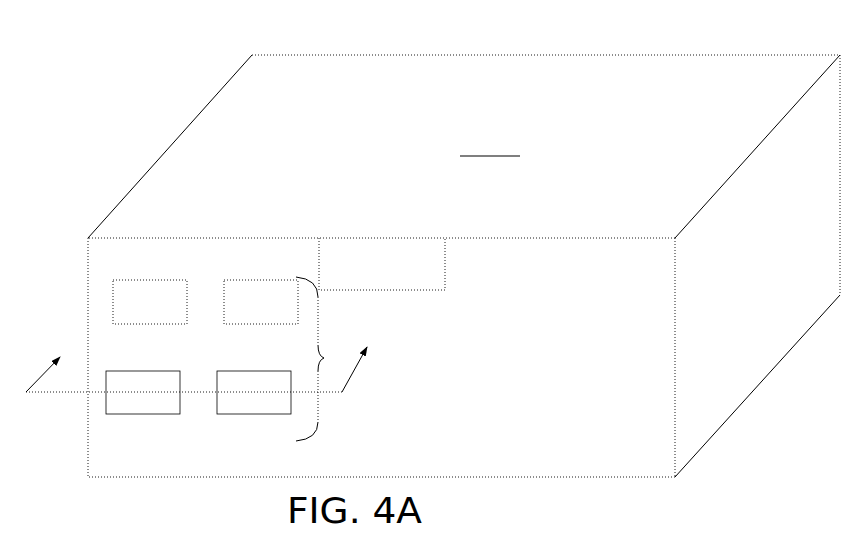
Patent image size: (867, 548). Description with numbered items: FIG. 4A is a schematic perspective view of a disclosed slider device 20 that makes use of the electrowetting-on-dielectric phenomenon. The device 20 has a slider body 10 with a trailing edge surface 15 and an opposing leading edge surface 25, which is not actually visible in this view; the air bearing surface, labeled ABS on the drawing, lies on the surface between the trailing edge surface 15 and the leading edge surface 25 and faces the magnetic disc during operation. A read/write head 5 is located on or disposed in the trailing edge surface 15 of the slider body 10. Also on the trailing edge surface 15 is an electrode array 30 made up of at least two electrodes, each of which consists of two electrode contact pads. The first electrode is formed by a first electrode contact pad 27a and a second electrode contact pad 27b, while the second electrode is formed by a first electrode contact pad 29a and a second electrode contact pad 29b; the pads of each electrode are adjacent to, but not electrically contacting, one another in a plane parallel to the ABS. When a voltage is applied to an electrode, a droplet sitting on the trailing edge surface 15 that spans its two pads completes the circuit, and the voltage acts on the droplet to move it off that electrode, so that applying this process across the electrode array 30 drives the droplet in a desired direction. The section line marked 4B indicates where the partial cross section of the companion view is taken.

The slider body 10 is at (832, 170).
The device 20 is at (607, 75).
The leading edge surface 25 is at (325, 54).
The trailing edge surface 15 is at (555, 395).
The read/write head 5 is at (393, 271).
The first electrode contact pad 27a is at (168, 313).
The second electrode contact pad 27b is at (279, 313).
The first electrode contact pad 29a is at (162, 406).
The second electrode contact pad 29b is at (273, 406).
The electrode array 30 is at (320, 359).
The section line 4B is at (95, 395).